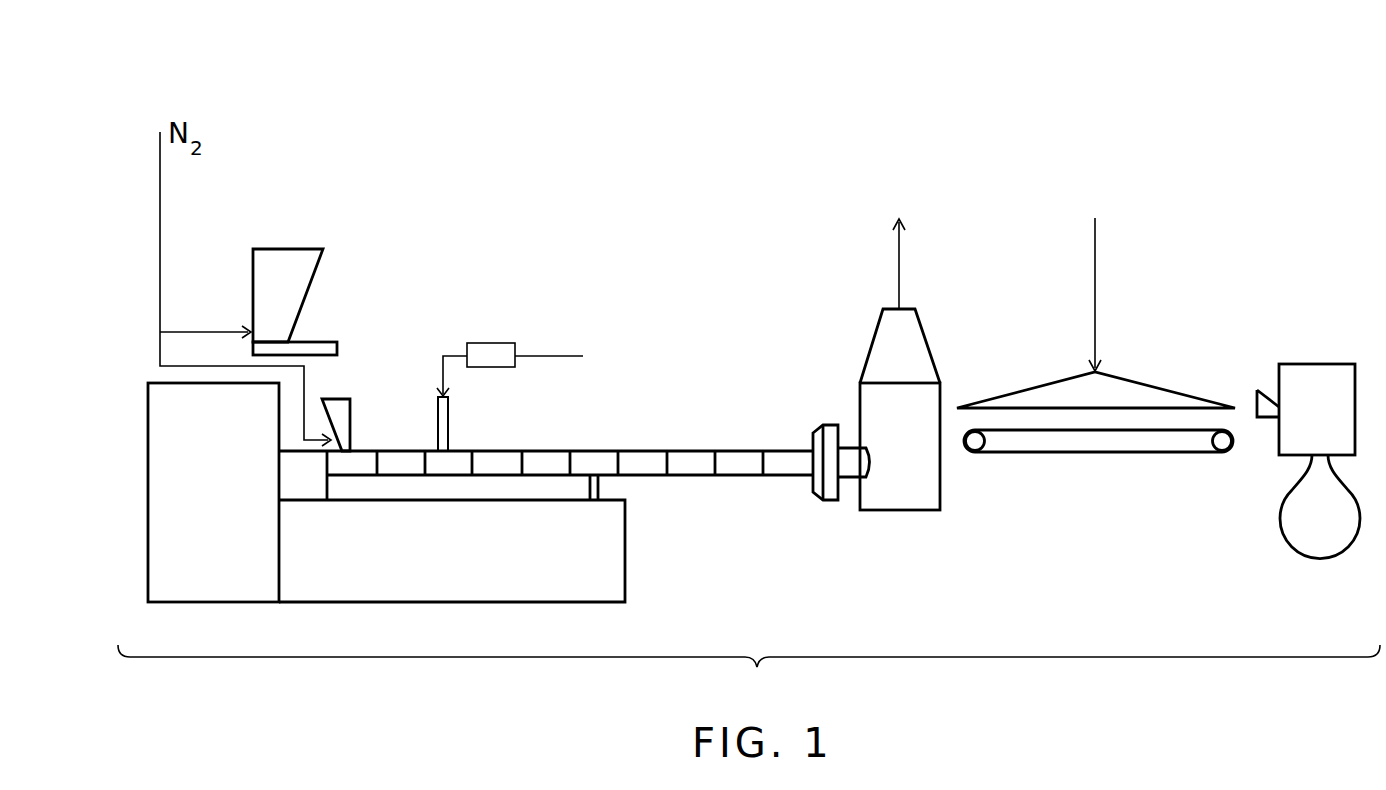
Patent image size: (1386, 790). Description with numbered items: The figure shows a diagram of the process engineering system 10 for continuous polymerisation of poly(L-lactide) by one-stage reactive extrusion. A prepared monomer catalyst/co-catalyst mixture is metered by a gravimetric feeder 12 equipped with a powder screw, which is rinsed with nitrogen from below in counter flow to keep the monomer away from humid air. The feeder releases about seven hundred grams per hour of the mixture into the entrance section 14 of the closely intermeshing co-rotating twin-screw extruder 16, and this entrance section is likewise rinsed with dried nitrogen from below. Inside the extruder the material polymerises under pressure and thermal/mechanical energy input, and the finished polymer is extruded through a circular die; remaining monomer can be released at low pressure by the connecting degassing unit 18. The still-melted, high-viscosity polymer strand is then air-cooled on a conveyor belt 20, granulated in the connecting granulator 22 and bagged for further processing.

The process engineering system 10 is at (700, 150).
The gravimetric feeder 12 is at (277, 254).
The entrance section 14 is at (337, 398).
The twin-screw extruder 16 is at (688, 476).
The degassing unit 18 is at (902, 487).
The conveyor belt 20 is at (1095, 453).
The granulator 22 is at (1318, 363).